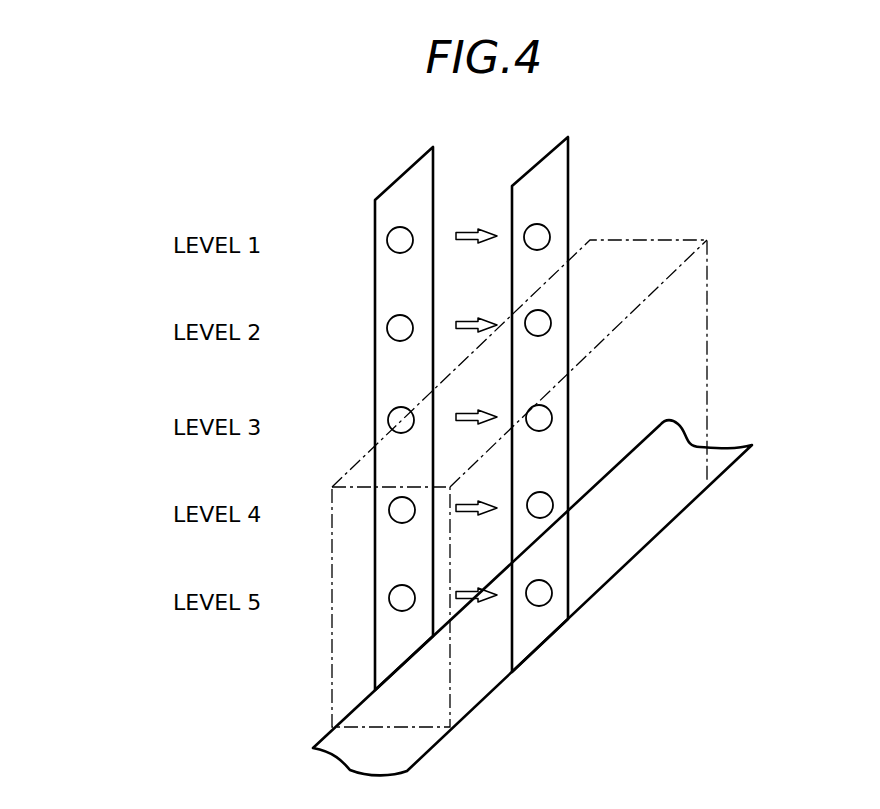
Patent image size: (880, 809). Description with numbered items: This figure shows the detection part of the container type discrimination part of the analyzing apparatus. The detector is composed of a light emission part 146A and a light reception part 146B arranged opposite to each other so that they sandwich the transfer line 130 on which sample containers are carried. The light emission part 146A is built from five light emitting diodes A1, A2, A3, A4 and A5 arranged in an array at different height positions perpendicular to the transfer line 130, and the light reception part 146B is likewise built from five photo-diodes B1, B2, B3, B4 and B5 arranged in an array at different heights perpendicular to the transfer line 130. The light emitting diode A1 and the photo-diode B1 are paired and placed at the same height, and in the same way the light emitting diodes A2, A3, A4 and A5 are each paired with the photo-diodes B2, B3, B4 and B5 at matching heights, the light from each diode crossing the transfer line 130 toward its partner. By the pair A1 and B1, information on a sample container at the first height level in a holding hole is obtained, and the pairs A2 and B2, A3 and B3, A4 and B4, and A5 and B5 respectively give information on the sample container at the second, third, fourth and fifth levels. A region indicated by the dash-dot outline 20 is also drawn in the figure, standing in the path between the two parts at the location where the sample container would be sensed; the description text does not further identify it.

The light emission part 146A is at (400, 175).
The light reception part 146B is at (532, 160).
The light emitting diode A1 is at (399, 242).
The light emitting diode A2 is at (399, 329).
The light emitting diode A3 is at (400, 421).
The light emitting diode A4 is at (401, 511).
The light emitting diode A5 is at (401, 599).
The photo-diode B1 is at (538, 239).
The photo-diode B2 is at (539, 325).
The photo-diode B3 is at (540, 420).
The photo-diode B4 is at (541, 507).
The photo-diode B5 is at (540, 595).
The container region 20 is at (707, 290).
The transfer line 130 is at (397, 758).